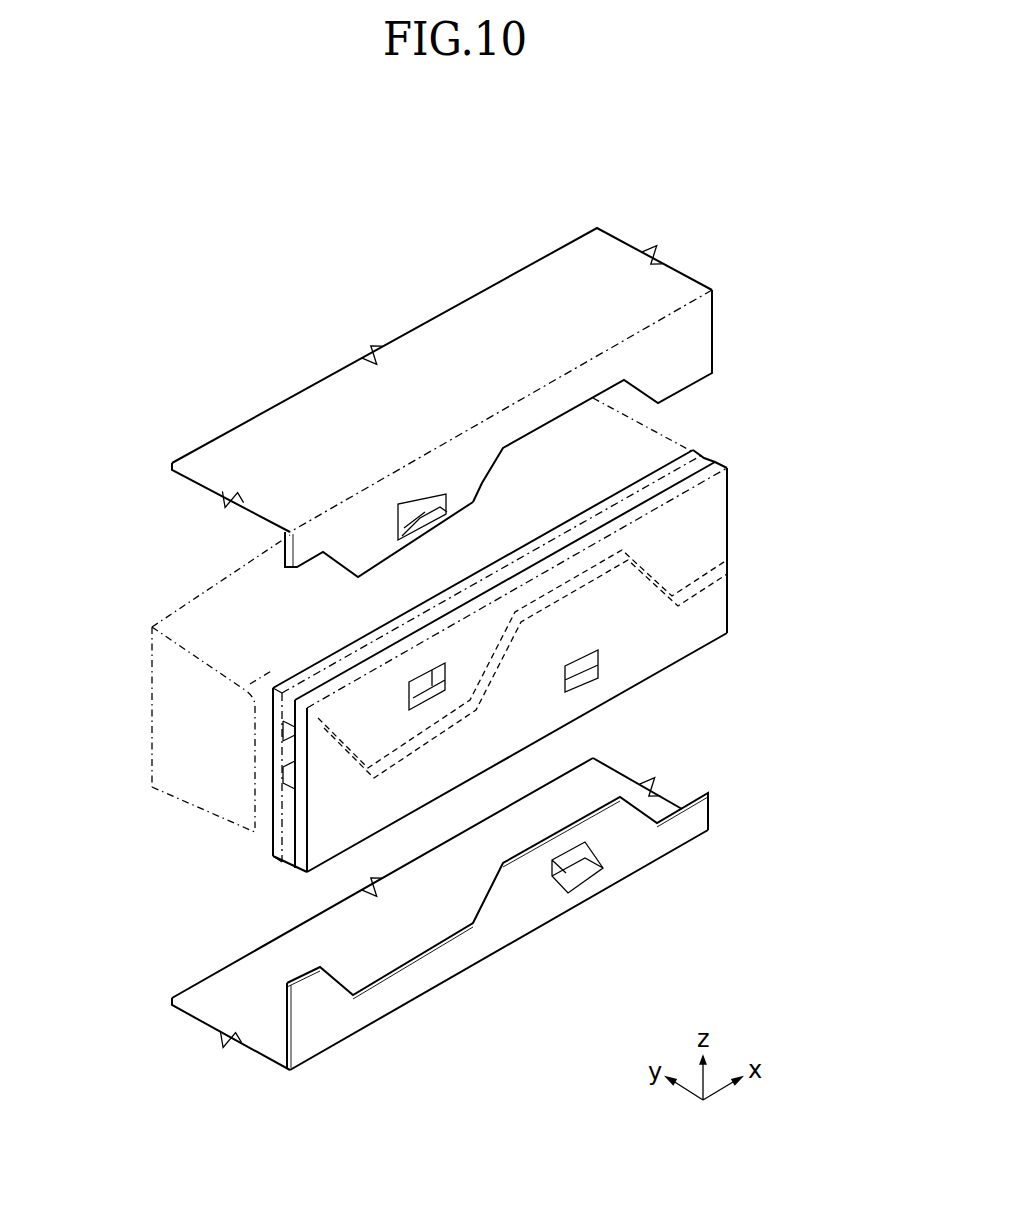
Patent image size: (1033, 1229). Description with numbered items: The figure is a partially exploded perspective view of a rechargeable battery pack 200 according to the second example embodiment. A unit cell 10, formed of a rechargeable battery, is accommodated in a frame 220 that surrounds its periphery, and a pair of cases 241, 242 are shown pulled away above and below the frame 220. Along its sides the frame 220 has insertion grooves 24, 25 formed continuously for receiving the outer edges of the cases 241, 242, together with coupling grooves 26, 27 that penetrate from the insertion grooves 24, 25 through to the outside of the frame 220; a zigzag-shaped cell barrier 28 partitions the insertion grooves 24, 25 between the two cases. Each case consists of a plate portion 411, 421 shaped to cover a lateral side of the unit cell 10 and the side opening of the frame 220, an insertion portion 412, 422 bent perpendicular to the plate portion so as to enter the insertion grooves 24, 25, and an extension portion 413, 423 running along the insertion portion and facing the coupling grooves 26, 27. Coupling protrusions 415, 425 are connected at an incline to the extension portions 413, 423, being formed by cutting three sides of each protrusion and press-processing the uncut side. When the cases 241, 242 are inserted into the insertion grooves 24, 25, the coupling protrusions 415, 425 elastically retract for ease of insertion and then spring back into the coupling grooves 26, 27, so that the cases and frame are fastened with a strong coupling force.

The unit cell 10 is at (167, 665).
The rechargeable battery pack 200 is at (257, 212).
The frame board 220 is at (733, 518).
The insertion groove 24 is at (323, 690).
The insertion groove 25 is at (287, 781).
The coupling groove 26 is at (438, 667).
The coupling groove 27 is at (597, 663).
The cell barrier 28 is at (342, 772).
The case 241 is at (694, 270).
The case 242 is at (716, 781).
The plate portion 411 is at (498, 303).
The insertion portion 412 is at (505, 430).
The extension portion 413 is at (365, 557).
The coupling protrusion 415 is at (457, 499).
The plate portion 421 is at (612, 778).
The insertion portion 422 is at (673, 837).
The extension portion 423 is at (525, 883).
The coupling protrusion 425 is at (603, 884).